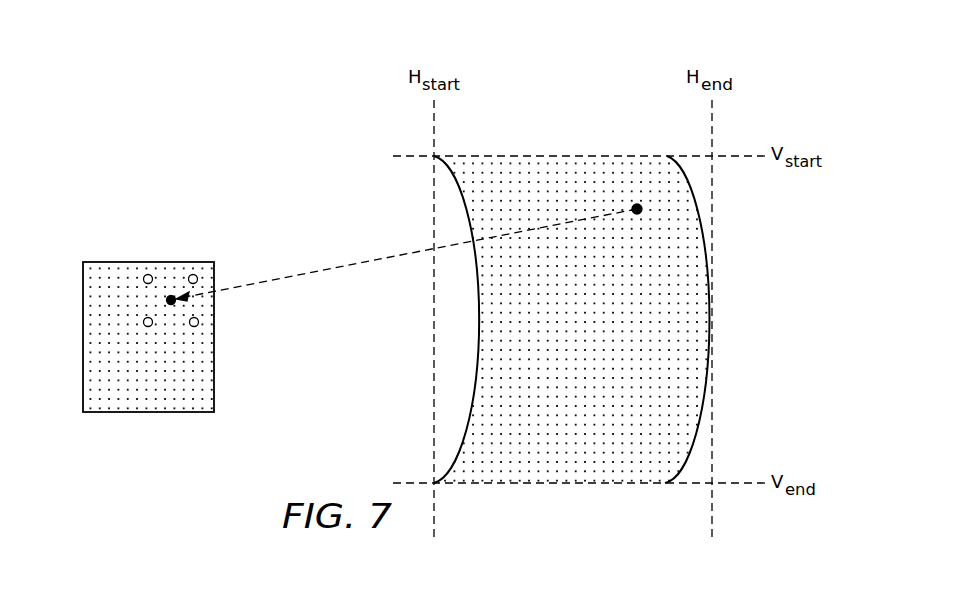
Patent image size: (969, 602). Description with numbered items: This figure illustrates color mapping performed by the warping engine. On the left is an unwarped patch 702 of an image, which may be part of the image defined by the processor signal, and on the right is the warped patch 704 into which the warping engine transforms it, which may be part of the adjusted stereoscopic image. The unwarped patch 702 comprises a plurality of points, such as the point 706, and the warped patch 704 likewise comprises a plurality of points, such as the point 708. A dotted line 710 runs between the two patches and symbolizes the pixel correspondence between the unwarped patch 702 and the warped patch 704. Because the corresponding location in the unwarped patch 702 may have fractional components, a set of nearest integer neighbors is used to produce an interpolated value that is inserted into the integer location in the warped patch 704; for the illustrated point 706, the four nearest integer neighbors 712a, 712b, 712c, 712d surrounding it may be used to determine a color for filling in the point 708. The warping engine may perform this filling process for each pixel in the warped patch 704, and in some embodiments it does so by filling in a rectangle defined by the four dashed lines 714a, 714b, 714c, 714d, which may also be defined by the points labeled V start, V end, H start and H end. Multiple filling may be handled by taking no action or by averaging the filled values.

The unwarped patch 702 is at (83, 338).
The warped patch 704 is at (699, 424).
The point 706 is at (170, 295).
The point 708 is at (641, 216).
The dotted line 710 is at (326, 270).
The nearest integer neighbor 712a is at (143, 279).
The nearest integer neighbor 712b is at (196, 274).
The nearest integer neighbor 712c is at (147, 327).
The nearest integer neighbor 712d is at (199, 322).
The dashed line 714a is at (571, 153).
The dashed line 714b is at (570, 486).
The dashed line 714c is at (437, 505).
The dashed line 714d is at (712, 518).